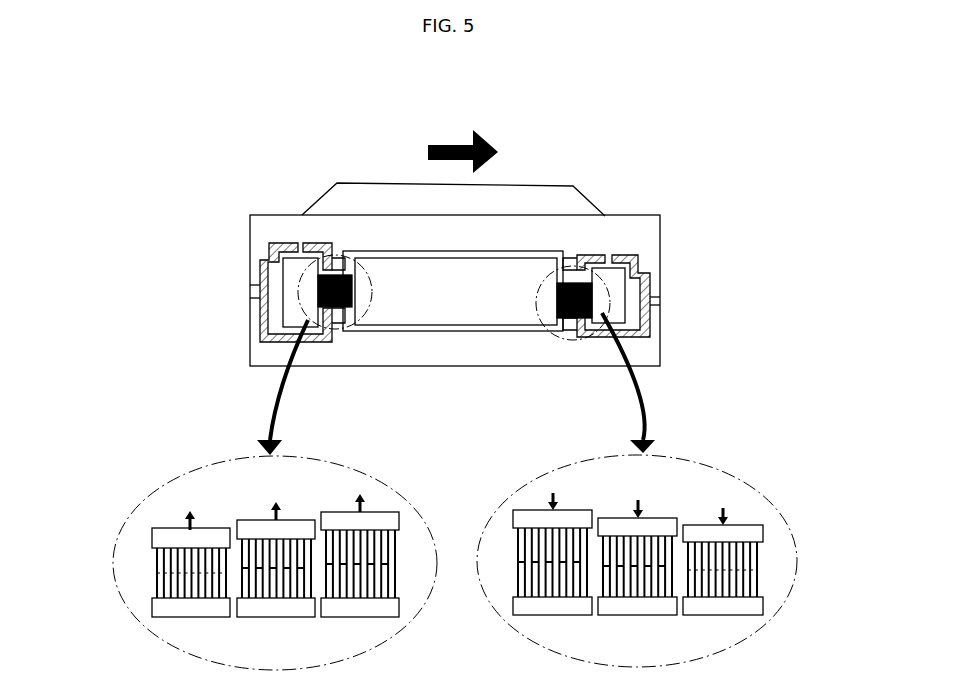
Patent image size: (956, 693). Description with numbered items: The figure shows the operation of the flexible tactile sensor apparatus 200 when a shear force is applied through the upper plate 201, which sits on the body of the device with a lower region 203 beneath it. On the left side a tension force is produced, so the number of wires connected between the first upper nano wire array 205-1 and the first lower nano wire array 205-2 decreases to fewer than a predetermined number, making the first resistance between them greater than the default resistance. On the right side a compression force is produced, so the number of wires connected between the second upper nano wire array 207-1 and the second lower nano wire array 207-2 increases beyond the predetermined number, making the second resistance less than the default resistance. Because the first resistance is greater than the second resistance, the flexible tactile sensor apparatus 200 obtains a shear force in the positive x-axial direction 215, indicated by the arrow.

The flexible tactile sensor apparatus 200 is at (269, 142).
The upper plate 201 is at (258, 238).
The support frame 203 is at (258, 353).
The first upper nano wire array 205-1 is at (157, 558).
The first lower nano wire array 205-2 is at (157, 585).
The second upper nano wire array 207-1 is at (758, 552).
The second lower nano wire array 207-2 is at (758, 580).
The positive x-axial direction 215 is at (428, 150).